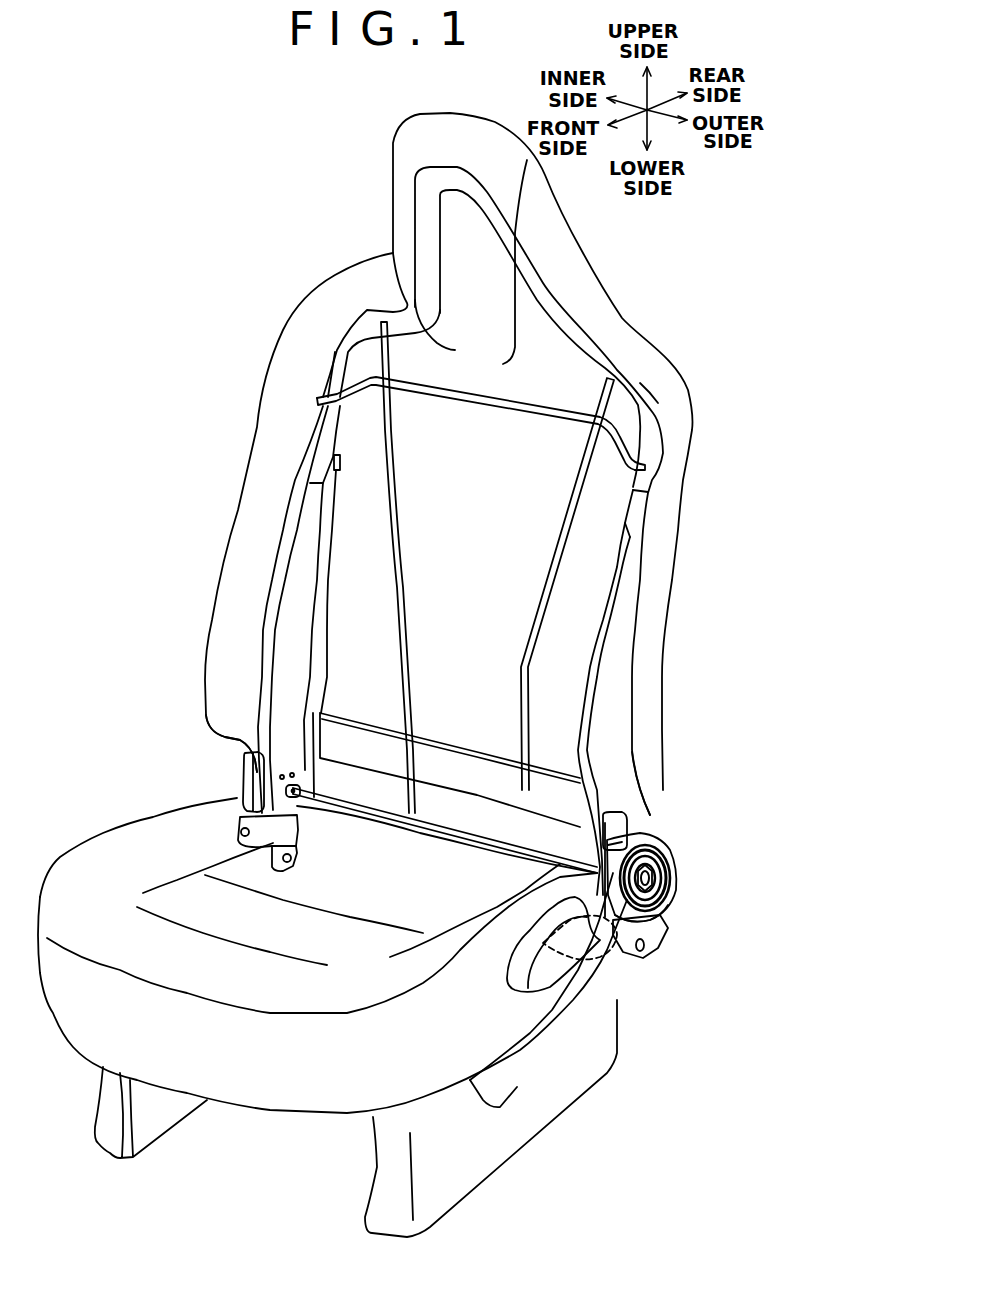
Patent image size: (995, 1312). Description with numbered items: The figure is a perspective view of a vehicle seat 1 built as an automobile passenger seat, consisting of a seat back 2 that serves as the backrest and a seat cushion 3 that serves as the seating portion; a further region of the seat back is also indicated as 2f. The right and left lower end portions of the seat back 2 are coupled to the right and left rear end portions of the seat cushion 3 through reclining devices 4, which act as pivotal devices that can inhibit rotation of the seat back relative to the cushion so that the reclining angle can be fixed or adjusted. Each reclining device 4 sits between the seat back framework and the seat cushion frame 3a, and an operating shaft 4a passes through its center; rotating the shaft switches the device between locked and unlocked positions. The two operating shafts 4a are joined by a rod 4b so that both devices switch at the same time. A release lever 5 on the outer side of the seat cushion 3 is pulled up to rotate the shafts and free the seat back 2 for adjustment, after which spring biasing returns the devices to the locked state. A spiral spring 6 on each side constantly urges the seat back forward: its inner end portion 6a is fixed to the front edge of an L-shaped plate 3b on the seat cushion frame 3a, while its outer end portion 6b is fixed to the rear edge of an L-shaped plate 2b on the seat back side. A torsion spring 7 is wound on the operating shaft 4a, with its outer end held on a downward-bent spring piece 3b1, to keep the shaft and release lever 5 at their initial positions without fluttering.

The vehicle seat 1 is at (141, 262).
The seat back 2 is at (285, 331).
The seat back frame / pad shoulder 2f is at (627, 390).
The L-shaped plate 2b is at (257, 755).
The seat cushion 3 is at (121, 846).
The seat cushion frame 3a is at (280, 828).
The L-shaped plate 3b is at (667, 867).
The spring piece 3b1 is at (663, 850).
The reclining device 4 is at (257, 788).
The operating shaft 4a is at (297, 788).
The rod 4b is at (410, 820).
The release lever 5 is at (553, 970).
The spiral spring 6 is at (247, 768).
The inner end portion 6a is at (650, 913).
The outer end portion 6b is at (643, 830).
The torsion spring 7 is at (657, 902).